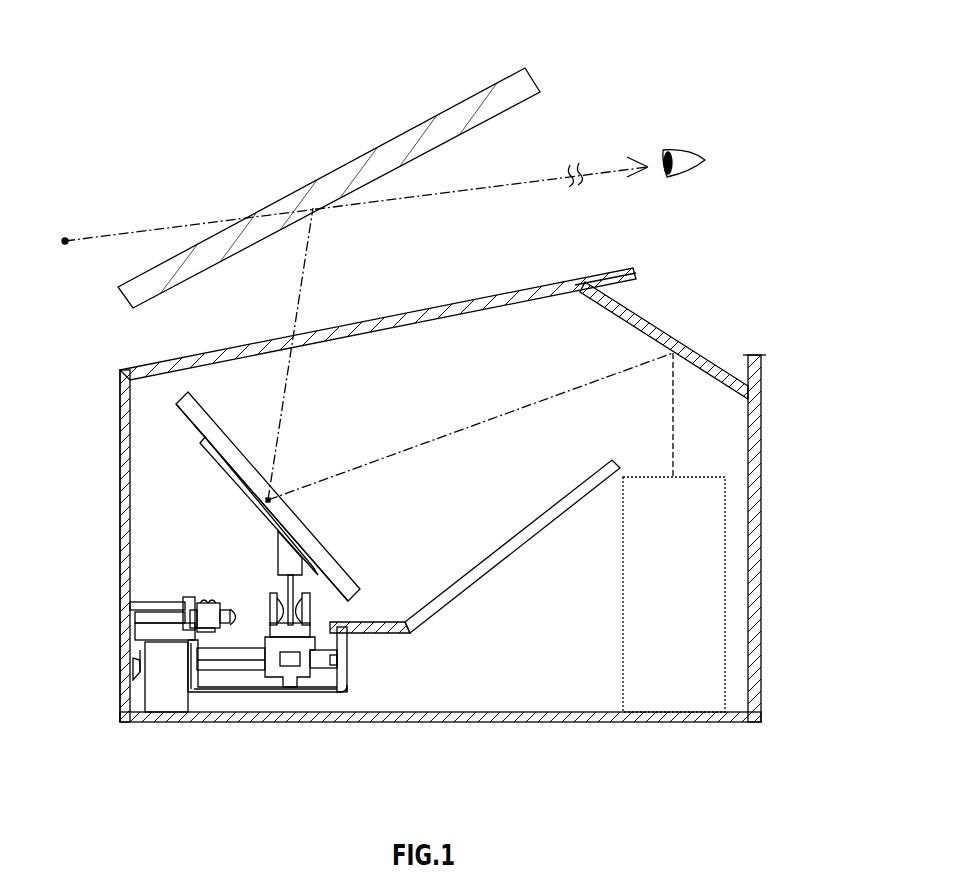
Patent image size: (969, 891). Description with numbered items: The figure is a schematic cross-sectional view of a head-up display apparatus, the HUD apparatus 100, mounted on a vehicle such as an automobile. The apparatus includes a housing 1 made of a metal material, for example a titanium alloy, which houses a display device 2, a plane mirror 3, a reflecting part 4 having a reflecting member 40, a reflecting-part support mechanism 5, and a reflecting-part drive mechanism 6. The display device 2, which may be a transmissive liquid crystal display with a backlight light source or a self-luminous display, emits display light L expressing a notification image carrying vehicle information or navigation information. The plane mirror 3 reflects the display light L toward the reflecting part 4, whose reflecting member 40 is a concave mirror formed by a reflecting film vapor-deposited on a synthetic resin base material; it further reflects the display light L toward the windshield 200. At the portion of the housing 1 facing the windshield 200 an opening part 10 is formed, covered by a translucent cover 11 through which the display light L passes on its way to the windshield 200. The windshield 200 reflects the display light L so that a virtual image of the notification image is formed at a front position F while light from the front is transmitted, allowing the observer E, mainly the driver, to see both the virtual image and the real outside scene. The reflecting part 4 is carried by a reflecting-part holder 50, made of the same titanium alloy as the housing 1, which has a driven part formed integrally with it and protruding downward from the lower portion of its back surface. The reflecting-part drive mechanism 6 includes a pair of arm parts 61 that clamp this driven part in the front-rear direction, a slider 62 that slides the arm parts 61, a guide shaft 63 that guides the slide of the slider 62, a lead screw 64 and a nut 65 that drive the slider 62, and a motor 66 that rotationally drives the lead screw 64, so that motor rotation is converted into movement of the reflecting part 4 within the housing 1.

The housing 1 is at (545, 714).
The display device 2 is at (695, 612).
The plane mirror 3 is at (652, 318).
The reflecting part 4 is at (306, 496).
The reflecting-part support mechanism 5 is at (277, 597).
The reflecting-part drive mechanism 6 is at (175, 588).
The opening part 10 is at (587, 287).
The translucent cover 11 is at (462, 302).
The reflecting member 40 is at (332, 575).
The reflecting-part holder 50 is at (248, 502).
The arm parts 61 is at (268, 595).
The slider 62 is at (340, 660).
The guide shaft 63 is at (275, 690).
The lead screw 64 is at (225, 675).
The nut 65 is at (300, 662).
The motor 66 is at (162, 705).
The HUD apparatus 100 is at (108, 398).
The windshield 200 is at (373, 157).
The observer E is at (686, 147).
The front position F is at (353, 200).
The display light L is at (510, 410).